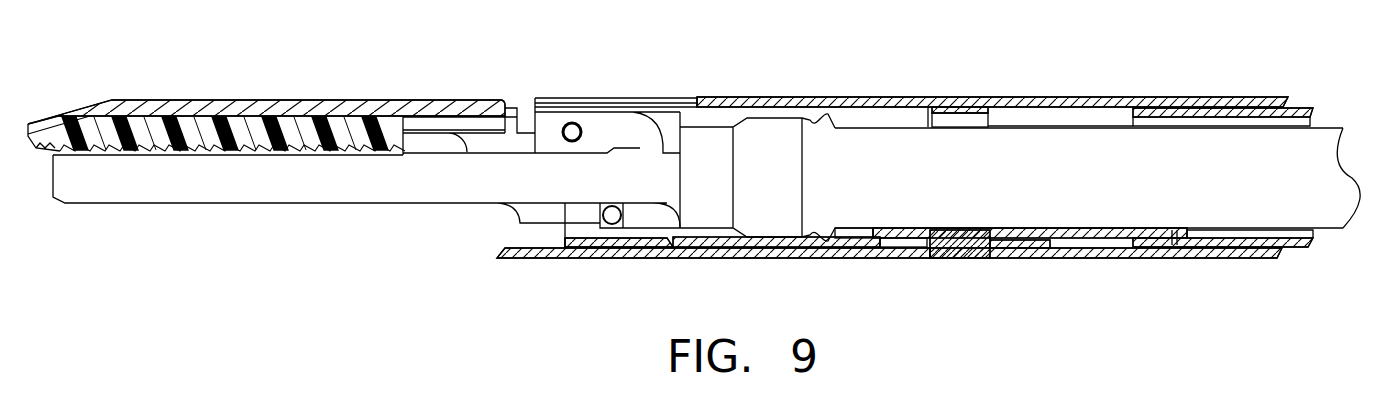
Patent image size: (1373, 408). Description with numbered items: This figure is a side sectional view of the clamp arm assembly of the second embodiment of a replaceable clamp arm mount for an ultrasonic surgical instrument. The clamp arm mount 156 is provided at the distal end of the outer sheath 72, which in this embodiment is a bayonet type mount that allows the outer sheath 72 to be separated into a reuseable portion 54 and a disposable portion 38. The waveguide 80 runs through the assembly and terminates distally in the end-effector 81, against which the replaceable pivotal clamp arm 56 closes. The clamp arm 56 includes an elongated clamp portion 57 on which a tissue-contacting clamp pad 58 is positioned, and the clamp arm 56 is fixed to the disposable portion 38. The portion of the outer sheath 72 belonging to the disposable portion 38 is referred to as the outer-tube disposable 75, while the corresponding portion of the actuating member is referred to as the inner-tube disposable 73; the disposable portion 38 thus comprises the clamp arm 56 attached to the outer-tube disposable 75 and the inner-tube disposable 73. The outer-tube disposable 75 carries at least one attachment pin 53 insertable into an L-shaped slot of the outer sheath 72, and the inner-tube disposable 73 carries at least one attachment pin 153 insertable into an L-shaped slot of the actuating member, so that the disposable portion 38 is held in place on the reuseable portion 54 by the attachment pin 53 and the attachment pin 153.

The disposable portion 38 is at (556, 298).
The attachment pin 53 is at (965, 259).
The reuseable portion 54 is at (1200, 270).
The clamp arm 56 is at (213, 82).
The elongated clamp portion 57 is at (248, 107).
The clamp pad 58 is at (92, 150).
The outer sheath 72 is at (1028, 252).
The inner-tube disposable 73 is at (1063, 243).
The outer-tube disposable 75 is at (757, 255).
The waveguide 80 is at (1068, 189).
The end-effector 81 is at (245, 182).
The attachment pin 153 is at (1173, 230).
The clamp arm mount 156 is at (690, 96).